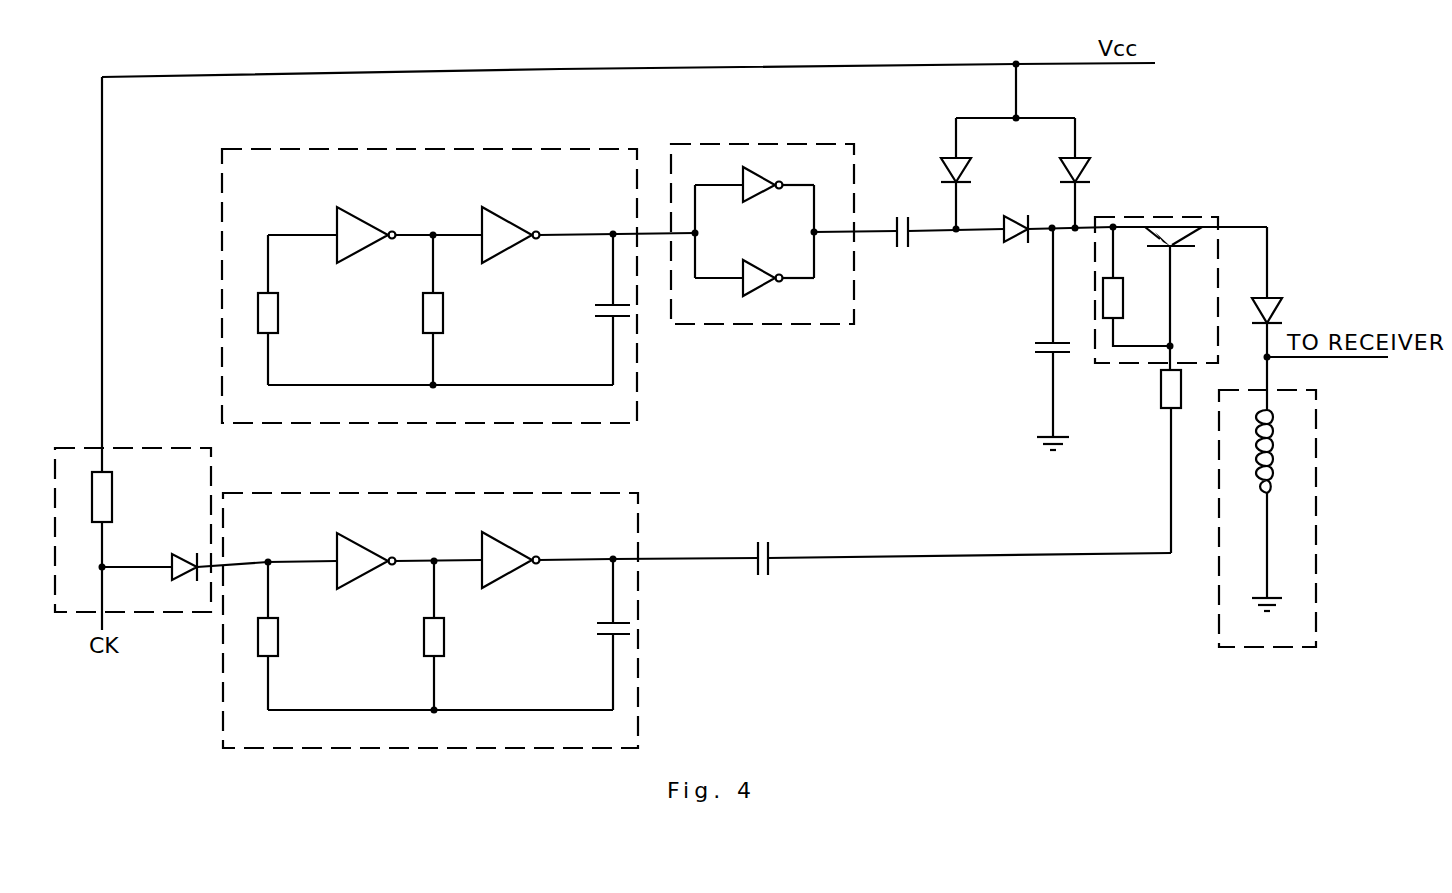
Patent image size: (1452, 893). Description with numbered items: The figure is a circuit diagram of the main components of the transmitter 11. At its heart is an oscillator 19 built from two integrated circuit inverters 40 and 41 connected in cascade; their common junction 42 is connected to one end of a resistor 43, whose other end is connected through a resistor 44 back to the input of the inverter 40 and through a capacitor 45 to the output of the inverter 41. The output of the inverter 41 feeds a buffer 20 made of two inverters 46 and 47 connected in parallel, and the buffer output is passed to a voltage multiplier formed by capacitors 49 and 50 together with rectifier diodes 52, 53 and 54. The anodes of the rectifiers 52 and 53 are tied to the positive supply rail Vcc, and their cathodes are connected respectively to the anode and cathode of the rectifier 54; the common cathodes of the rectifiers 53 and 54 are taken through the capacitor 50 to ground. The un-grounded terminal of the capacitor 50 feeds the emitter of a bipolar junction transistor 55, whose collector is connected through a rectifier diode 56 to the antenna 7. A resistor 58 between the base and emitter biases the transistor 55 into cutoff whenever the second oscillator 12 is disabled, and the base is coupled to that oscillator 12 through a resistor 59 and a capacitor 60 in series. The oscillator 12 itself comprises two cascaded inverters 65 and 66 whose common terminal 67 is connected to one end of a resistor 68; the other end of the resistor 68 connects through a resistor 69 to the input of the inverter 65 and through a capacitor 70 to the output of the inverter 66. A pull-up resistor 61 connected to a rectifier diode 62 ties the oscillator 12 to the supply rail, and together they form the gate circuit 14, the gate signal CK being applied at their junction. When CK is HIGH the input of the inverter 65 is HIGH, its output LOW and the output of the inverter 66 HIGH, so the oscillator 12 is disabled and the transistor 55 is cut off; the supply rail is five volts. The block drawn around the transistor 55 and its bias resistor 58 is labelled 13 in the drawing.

The antenna 7 is at (1318, 460).
The transmitter 11 is at (882, 635).
The oscillator 12 is at (430, 492).
The switching transistor stage 13 is at (1218, 217).
The gate circuit 14 is at (150, 448).
The oscillator 19 is at (220, 365).
The buffer 20 is at (725, 325).
The inverter 40 is at (355, 228).
The inverter 41 is at (497, 222).
The common junction 42 is at (433, 225).
The resistor 43 is at (442, 307).
The resistor 44 is at (274, 306).
The capacitor 45 is at (600, 305).
The inverter 46 is at (752, 178).
The inverter 47 is at (758, 282).
The capacitor 49 is at (910, 240).
The capacitor 50 is at (1045, 343).
The rectifier diode 52 is at (960, 170).
The rectifier diode 53 is at (1080, 170).
The rectifier diode 54 is at (1020, 237).
The bipolar junction transistor 55 is at (1186, 232).
The rectifier diode 56 is at (1280, 300).
The resistor 58 is at (1110, 300).
The resistor 59 is at (1163, 395).
The capacitor 60 is at (772, 545).
The pull-up resistor 61 is at (110, 482).
The rectifier diode 62 is at (185, 560).
The inverter 65 is at (357, 554).
The inverter 66 is at (497, 548).
The common terminal 67 is at (434, 555).
The resistor 68 is at (445, 634).
The resistor 69 is at (272, 630).
The capacitor 70 is at (600, 634).